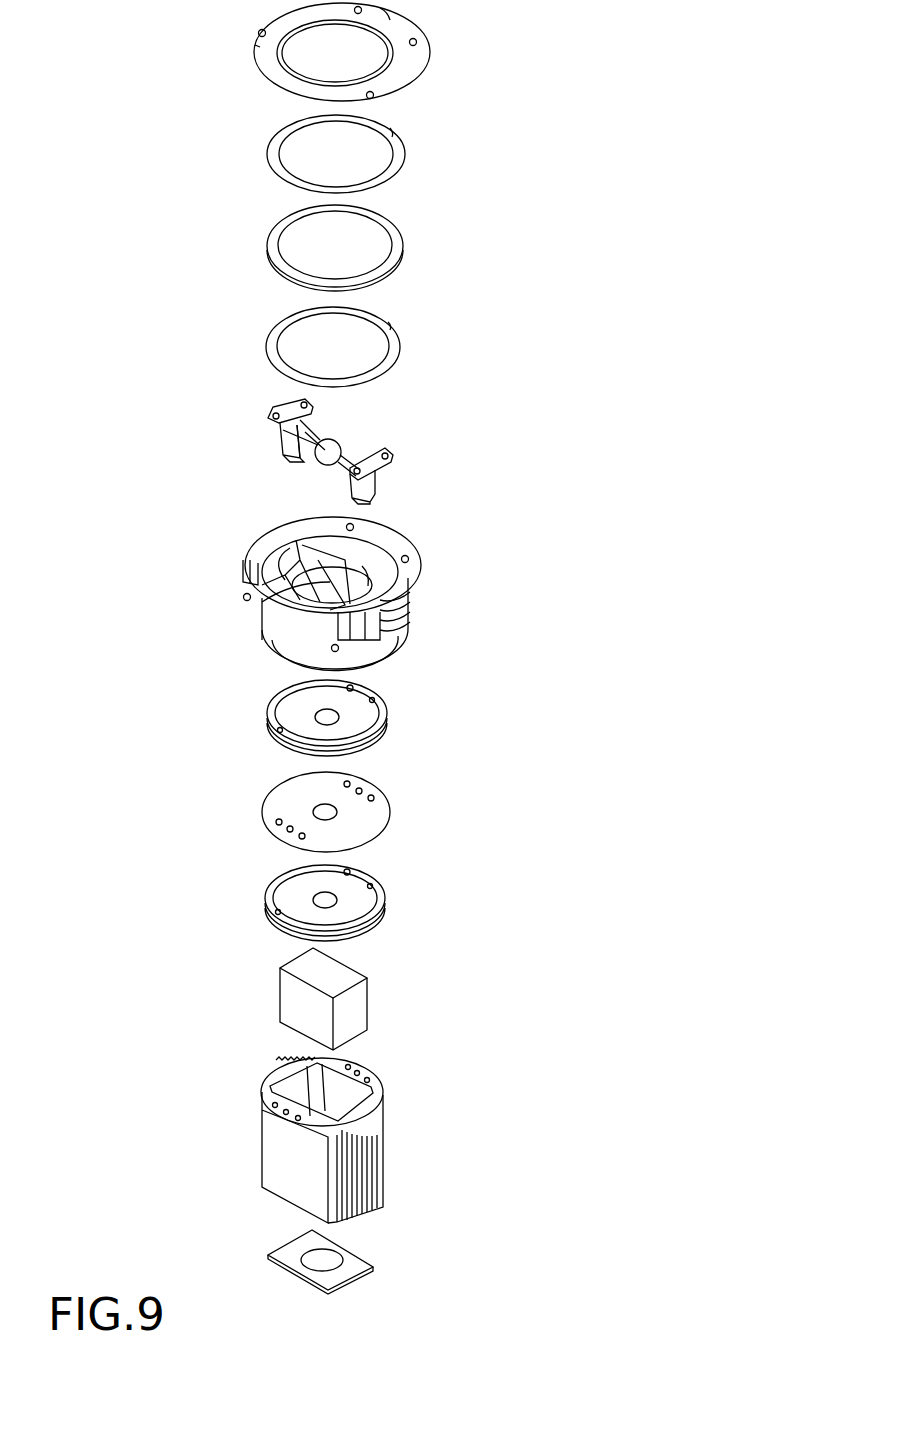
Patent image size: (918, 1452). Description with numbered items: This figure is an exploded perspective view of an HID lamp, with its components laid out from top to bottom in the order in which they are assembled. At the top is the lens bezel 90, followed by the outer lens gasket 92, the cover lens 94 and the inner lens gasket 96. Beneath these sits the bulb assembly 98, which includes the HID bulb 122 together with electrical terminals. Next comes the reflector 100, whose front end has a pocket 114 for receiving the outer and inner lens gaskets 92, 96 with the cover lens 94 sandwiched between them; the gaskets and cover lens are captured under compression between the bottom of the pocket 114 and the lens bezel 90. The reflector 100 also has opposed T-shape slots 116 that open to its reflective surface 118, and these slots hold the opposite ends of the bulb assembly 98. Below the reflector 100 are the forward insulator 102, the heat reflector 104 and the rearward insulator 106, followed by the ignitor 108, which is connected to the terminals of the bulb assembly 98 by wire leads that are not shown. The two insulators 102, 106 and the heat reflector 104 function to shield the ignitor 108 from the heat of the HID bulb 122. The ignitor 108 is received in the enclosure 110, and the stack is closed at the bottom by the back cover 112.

The lens bezel 90 is at (253, 40).
The outer lens gasket 92 is at (405, 162).
The cover lens 94 is at (266, 250).
The inner lens gasket 96 is at (400, 350).
The bulb assembly 98 is at (270, 450).
The HID bulb 122 is at (336, 442).
The reflector 100 is at (349, 586).
The pocket 114 is at (282, 547).
The T-shape slots 116 is at (368, 570).
The reflective surface 118 is at (367, 586).
The forward insulator 102 is at (263, 717).
The heat reflector 104 is at (398, 818).
The rearward insulator 106 is at (257, 905).
The ignitor 108 is at (372, 1008).
The enclosure 110 is at (258, 1148).
The back cover 112 is at (355, 1282).